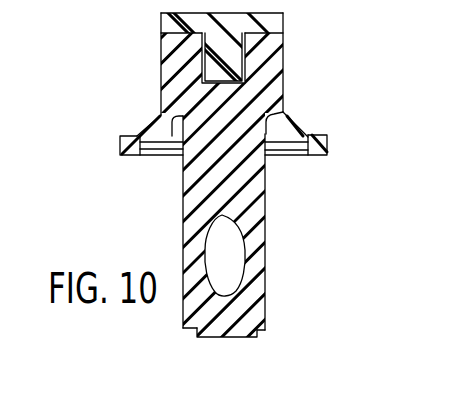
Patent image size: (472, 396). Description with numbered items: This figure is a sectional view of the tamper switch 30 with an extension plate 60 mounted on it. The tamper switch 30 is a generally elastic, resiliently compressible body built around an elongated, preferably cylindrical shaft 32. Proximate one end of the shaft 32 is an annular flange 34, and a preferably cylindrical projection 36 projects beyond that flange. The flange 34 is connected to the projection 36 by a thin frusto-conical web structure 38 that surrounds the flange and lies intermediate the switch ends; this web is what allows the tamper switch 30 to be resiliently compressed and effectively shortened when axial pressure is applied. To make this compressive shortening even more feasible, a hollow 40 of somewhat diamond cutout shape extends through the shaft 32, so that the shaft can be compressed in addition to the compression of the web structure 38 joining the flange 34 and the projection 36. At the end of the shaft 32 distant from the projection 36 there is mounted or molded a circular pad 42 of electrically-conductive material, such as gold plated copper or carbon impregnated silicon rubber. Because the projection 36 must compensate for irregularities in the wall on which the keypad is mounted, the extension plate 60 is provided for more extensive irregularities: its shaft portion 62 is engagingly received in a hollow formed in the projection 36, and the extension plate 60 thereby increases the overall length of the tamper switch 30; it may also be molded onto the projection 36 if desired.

The tamper switch 30 is at (292, 221).
The shaft 32 is at (183, 323).
The annular flange 34 is at (328, 149).
The cylindrical projection 36 is at (286, 75).
The frusto-conical web structure 38 is at (161, 116).
The hollow 40 is at (235, 255).
The circular pad 42 is at (227, 337).
The extension plate 60 is at (248, 24).
The shaft portion 62 is at (227, 54).